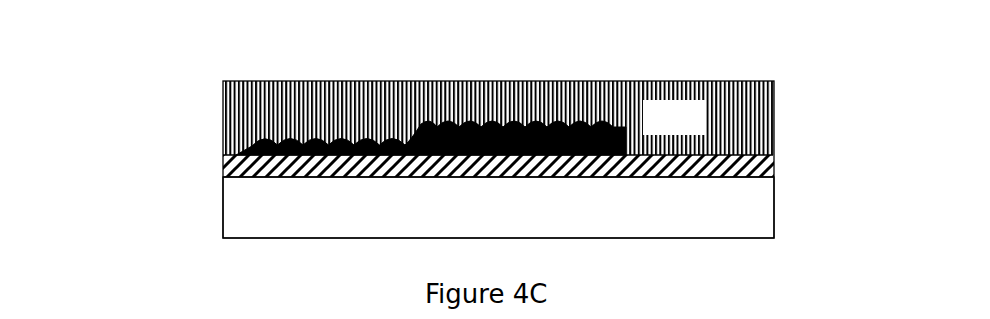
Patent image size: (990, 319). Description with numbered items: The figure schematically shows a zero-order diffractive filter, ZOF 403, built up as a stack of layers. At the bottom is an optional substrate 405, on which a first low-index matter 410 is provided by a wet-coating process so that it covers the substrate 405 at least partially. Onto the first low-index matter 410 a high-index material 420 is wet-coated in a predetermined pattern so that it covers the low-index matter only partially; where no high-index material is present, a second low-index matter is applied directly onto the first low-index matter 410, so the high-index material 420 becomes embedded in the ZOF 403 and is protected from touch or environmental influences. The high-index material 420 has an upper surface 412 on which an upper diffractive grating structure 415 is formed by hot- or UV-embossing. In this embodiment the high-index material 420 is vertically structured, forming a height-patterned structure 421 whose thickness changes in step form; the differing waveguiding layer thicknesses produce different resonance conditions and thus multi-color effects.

The zero-order diffractive filter 403 is at (839, 182).
The substrate 405 is at (223, 218).
The first low-index matter 410 is at (223, 165).
The upper surface 412 is at (247, 153).
The upper diffractive grating structure 415 is at (626, 122).
The high-index material 420 is at (277, 138).
The height-patterned structure 421 is at (446, 117).